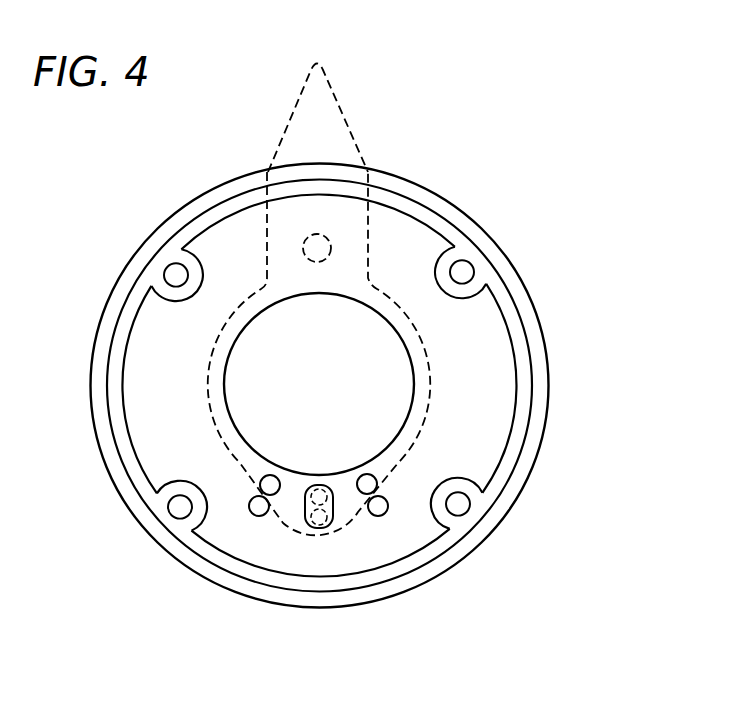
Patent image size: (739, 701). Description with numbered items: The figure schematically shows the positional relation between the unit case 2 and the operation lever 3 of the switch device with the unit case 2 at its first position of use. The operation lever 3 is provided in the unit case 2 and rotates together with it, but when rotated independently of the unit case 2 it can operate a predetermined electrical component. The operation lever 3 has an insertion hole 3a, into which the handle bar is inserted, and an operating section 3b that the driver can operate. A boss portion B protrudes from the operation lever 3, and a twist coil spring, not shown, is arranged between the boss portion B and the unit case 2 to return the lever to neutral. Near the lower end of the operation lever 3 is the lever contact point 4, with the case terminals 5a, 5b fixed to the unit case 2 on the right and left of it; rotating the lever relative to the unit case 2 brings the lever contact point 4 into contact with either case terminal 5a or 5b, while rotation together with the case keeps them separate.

The unit case 2 is at (522, 380).
The operation lever 3 is at (410, 300).
The insertion hole 3a is at (402, 340).
The operating section 3b is at (273, 152).
The boss portion B is at (331, 243).
The lever contact point 4 is at (332, 499).
The case terminal 5a is at (388, 507).
The case terminal 5b is at (249, 507).